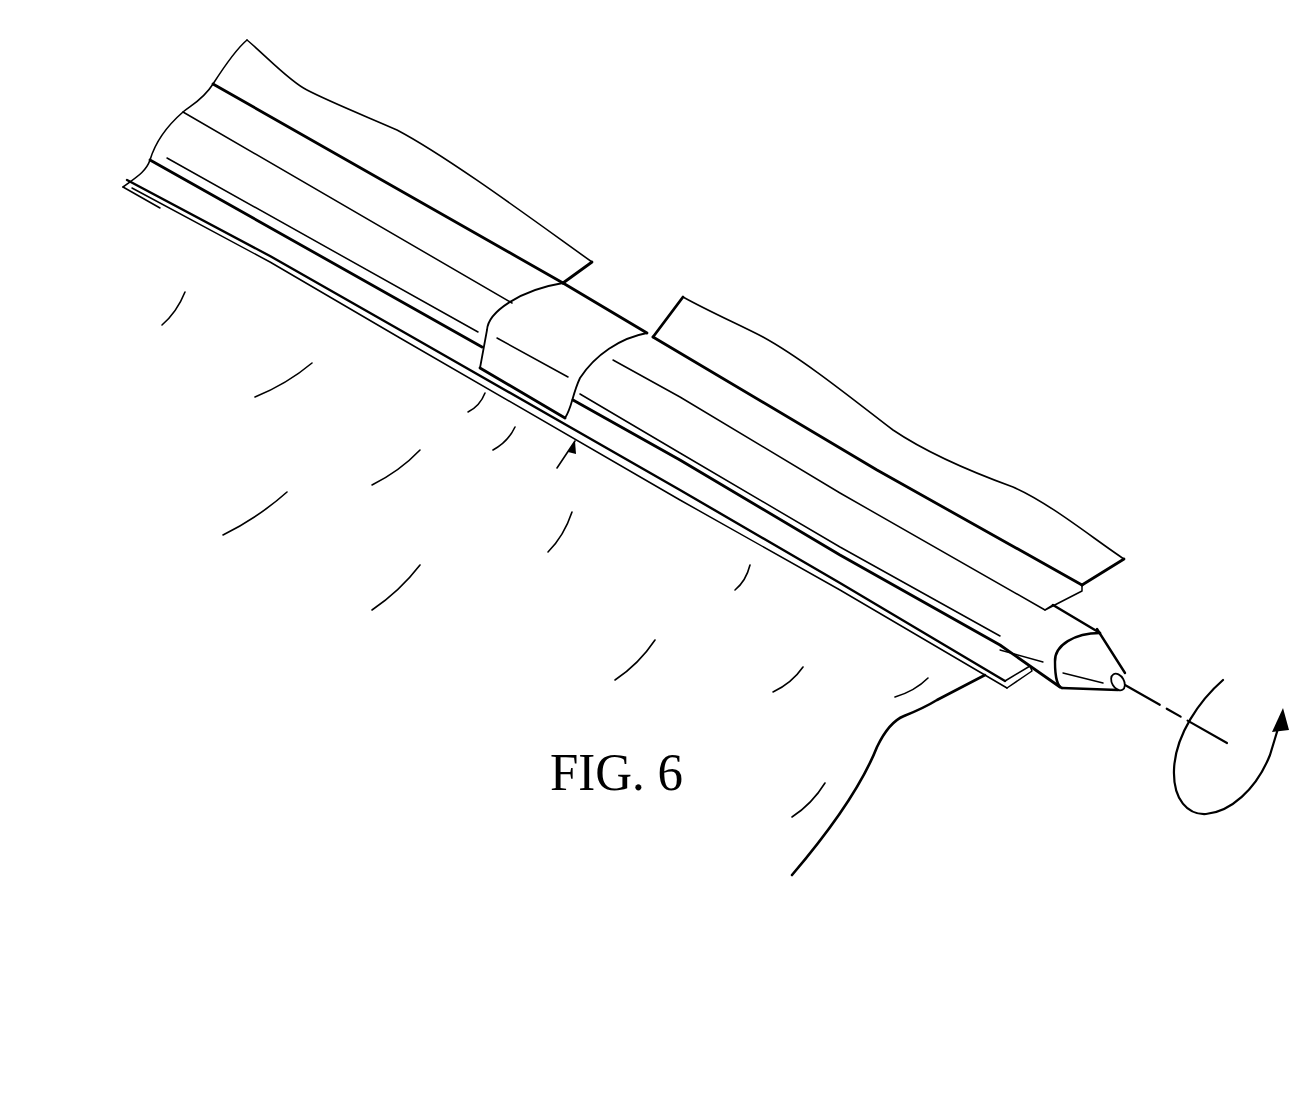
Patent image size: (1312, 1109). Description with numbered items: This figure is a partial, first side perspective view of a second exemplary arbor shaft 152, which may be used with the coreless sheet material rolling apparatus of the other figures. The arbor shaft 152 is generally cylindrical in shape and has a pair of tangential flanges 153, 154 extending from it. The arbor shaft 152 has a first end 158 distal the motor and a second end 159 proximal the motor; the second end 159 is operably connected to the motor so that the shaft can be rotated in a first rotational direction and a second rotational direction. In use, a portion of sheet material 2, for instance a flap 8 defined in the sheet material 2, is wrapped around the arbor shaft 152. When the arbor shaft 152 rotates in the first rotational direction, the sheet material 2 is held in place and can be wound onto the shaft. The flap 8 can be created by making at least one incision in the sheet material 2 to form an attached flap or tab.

The sheet material 2 is at (958, 487).
The flap 8 is at (585, 317).
The second exemplary arbor shaft 152 is at (400, 280).
The tangential flange 153 is at (748, 418).
The tangential flange 154 is at (722, 506).
The first end 158 is at (1105, 658).
The second end 159 is at (144, 207).